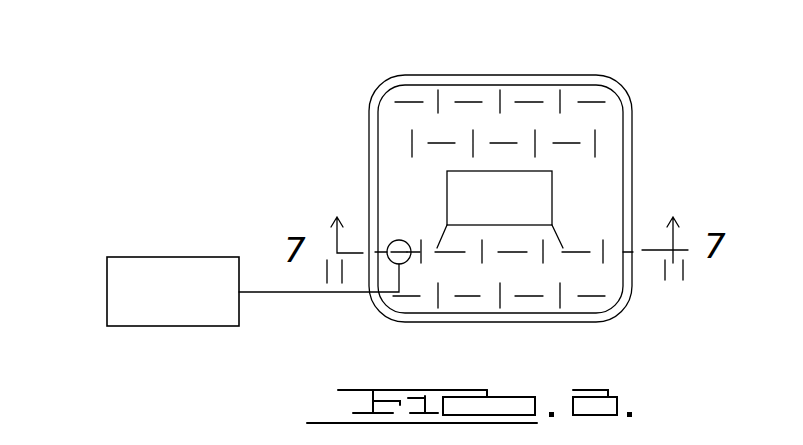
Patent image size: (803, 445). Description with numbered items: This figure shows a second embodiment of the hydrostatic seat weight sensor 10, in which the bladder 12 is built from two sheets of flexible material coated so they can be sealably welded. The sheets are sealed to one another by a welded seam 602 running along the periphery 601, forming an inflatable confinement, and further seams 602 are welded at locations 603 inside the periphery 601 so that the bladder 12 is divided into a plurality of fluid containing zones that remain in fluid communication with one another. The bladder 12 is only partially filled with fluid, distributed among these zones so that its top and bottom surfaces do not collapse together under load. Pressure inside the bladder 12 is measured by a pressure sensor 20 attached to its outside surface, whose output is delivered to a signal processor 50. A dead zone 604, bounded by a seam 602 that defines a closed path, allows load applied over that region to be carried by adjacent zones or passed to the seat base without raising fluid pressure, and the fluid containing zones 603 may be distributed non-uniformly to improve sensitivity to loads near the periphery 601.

The hydrostatic seat weight sensor 10 is at (287, 127).
The bladder 12 is at (387, 128).
The pressure sensor 20 is at (392, 262).
The signal processor 50 is at (108, 303).
The periphery 601 is at (615, 303).
The welded seam 602 is at (433, 98).
The fluid containing zones 603 is at (512, 303).
The dead zone 604 is at (455, 185).